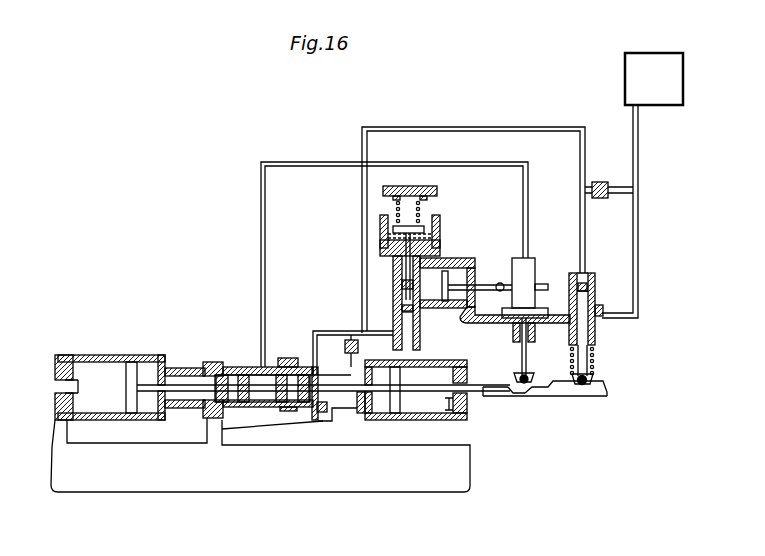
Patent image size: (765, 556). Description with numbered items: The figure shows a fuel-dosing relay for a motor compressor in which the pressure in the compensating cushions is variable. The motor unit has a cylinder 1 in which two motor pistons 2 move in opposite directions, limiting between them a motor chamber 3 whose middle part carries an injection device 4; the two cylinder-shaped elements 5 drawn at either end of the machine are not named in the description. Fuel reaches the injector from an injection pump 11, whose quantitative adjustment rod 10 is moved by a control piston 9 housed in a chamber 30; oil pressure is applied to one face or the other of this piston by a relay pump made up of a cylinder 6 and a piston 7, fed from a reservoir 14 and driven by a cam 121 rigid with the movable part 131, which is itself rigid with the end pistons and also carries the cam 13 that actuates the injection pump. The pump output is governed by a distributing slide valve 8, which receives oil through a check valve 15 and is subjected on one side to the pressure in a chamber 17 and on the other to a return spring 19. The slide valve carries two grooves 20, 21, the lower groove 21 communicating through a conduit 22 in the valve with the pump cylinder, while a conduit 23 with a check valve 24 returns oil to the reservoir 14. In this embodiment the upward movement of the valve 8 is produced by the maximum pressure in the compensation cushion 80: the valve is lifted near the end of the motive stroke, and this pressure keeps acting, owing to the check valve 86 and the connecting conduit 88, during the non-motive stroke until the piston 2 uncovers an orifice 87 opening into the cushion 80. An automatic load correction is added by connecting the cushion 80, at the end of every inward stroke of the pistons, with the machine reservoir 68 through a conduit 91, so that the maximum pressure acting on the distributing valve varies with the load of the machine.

The cylinder 1 is at (208, 362).
The motor pistons 2 is at (288, 372).
The motor chamber 3 is at (262, 403).
The injection device 4 is at (250, 366).
The hydraulic cylinder 5 is at (100, 367).
The cylinder of oil pump 6 is at (593, 306).
The piston of oil pump 7 is at (586, 358).
The slide valve 8 is at (395, 265).
The control piston 9 is at (446, 292).
The quantitative adjustment rod 10 is at (500, 283).
The injection pump 11 is at (533, 272).
The cam 121 is at (596, 392).
The cam 13 is at (525, 386).
The movable part 131 is at (507, 390).
The reservoir 14 is at (638, 67).
The check valve 15 is at (590, 284).
The chamber 17 is at (418, 332).
The return spring 19 is at (420, 205).
The groove 20 is at (398, 278).
The lower groove 21 is at (402, 312).
The conduit 22 is at (400, 292).
The conduit 23 is at (522, 131).
The check valve 24 is at (600, 182).
The chamber 30 is at (458, 268).
The reservoir of the machine 68 is at (405, 478).
The compensation cushion 80 is at (338, 403).
The check valve 86 is at (358, 346).
The orifice 87 is at (310, 370).
The conduit 88 is at (336, 331).
The conduit 91 is at (300, 430).